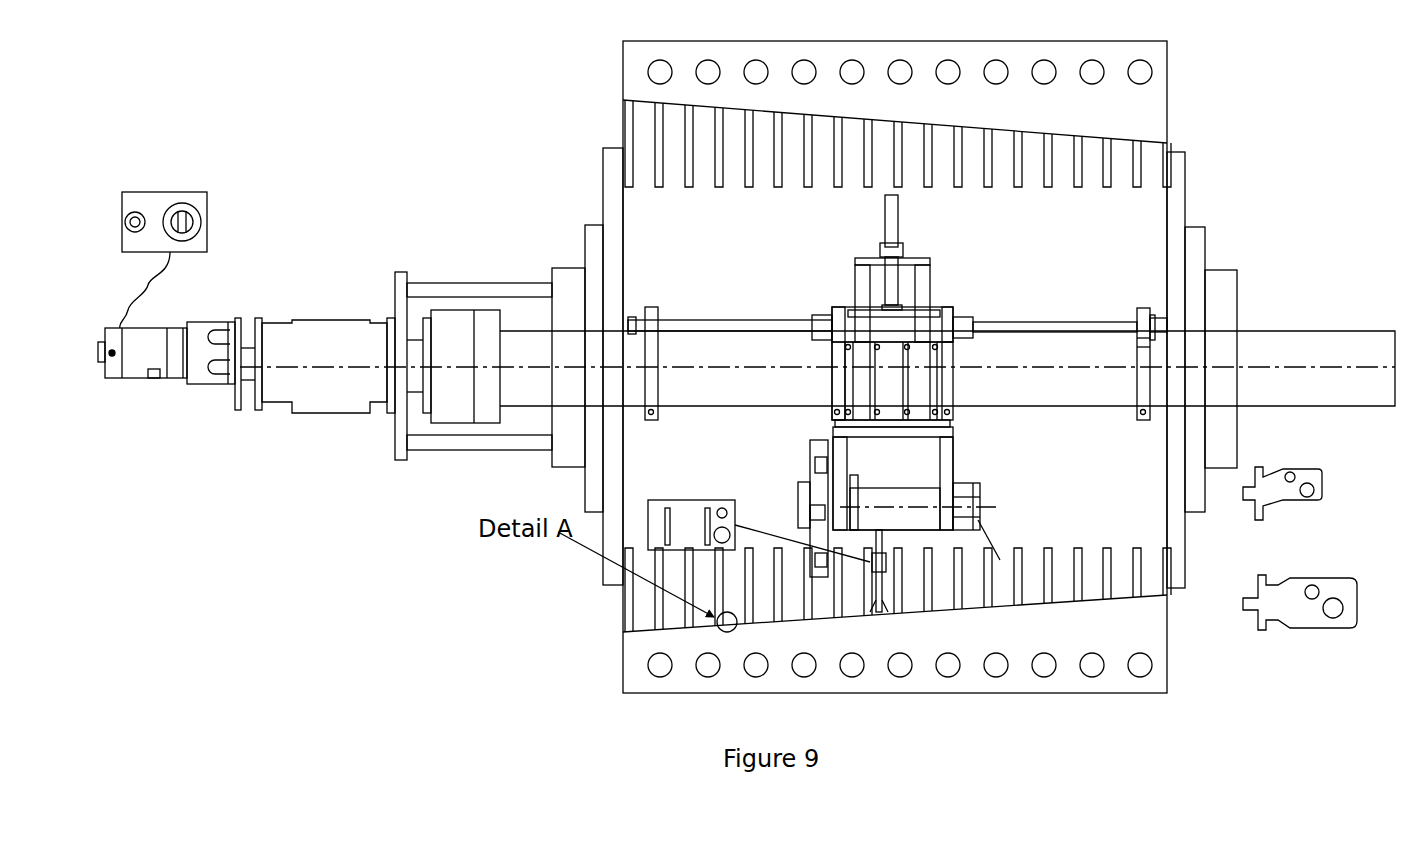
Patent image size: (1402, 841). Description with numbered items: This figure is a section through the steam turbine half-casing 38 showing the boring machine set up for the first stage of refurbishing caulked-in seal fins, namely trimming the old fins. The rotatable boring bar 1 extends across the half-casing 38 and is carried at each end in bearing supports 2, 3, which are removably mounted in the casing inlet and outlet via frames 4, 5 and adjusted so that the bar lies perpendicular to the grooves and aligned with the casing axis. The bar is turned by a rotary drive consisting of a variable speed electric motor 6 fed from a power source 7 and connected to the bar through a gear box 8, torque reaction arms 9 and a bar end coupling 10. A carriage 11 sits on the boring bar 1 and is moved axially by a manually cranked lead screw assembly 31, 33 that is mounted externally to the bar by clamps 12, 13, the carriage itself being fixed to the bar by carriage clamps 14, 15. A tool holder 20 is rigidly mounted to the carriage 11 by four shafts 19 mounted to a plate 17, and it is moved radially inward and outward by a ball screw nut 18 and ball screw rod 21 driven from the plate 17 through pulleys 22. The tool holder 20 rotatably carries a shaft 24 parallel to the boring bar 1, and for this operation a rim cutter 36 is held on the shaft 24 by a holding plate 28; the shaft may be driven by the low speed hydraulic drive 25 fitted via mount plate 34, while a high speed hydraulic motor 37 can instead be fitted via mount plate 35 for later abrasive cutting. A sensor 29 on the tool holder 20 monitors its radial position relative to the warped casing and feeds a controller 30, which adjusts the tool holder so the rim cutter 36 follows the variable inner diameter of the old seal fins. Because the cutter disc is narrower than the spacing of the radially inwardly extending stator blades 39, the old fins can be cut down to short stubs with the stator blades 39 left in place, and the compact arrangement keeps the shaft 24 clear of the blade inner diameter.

The boring bar 1 is at (1362, 331).
The bearing support 2 is at (1216, 275).
The bearing support 3 is at (1196, 232).
The frame 4 is at (1178, 155).
The frame 5 is at (603, 160).
The variable speed electric motor 6 is at (148, 330).
The power source 7 is at (210, 203).
The gear box 8 is at (300, 322).
The torque reaction arms 9 is at (408, 270).
The bar end coupling 10 is at (445, 307).
The carriage 11 is at (953, 425).
The clamp 12 is at (1146, 308).
The clamp 13 is at (656, 308).
The carriage clamp 14 is at (966, 340).
The carriage clamp 15 is at (836, 318).
The plate 17 is at (932, 262).
The ball screw nut 18 is at (900, 255).
The shafts 19 is at (932, 290).
The tool holder 20 is at (955, 448).
The ball screw rod 21 is at (884, 232).
The pulleys 22 is at (965, 320).
The shaft 24 is at (872, 488).
The hydraulic drive 25 is at (1298, 582).
The holding plate 28 is at (796, 496).
The sensor 29 is at (876, 610).
The controller 30 is at (700, 500).
The lead screw assembly 31 is at (1036, 333).
The lead screw 33 is at (650, 337).
The mount plate 34 is at (982, 498).
The mount plate 35 is at (980, 522).
The rim cutter 36 is at (808, 458).
The high speed hydraulic motor 37 is at (1318, 485).
The turbine half-casing 38 is at (862, 40).
The stator blades 39 is at (712, 192).